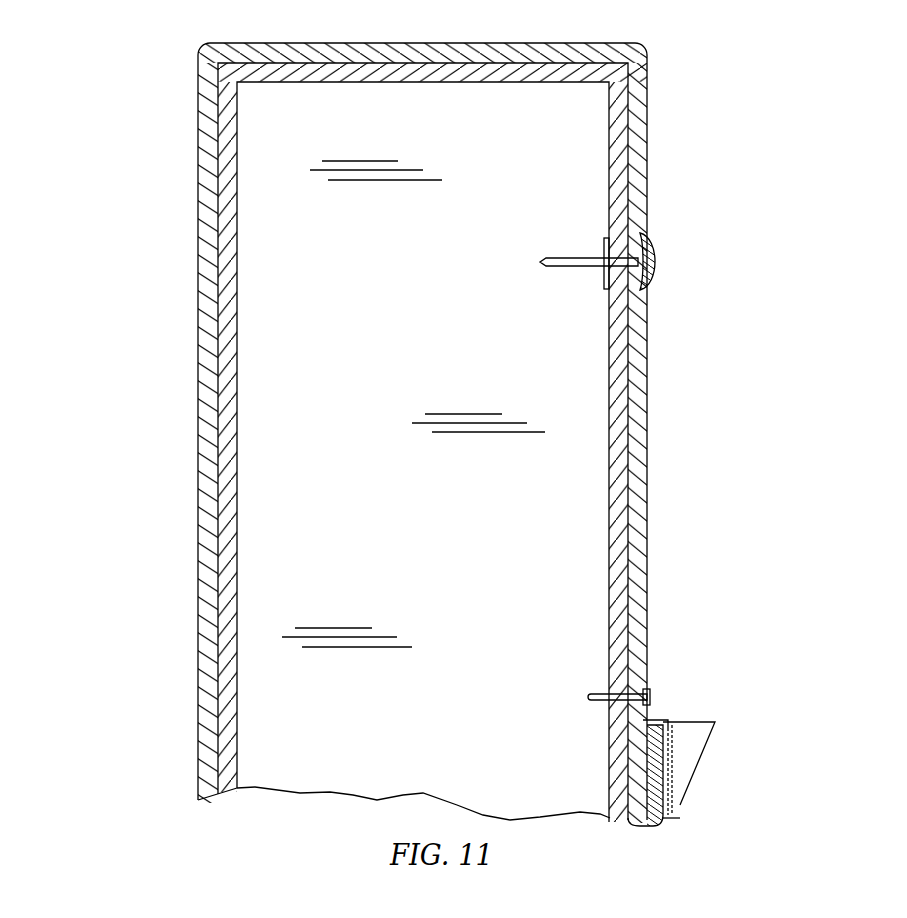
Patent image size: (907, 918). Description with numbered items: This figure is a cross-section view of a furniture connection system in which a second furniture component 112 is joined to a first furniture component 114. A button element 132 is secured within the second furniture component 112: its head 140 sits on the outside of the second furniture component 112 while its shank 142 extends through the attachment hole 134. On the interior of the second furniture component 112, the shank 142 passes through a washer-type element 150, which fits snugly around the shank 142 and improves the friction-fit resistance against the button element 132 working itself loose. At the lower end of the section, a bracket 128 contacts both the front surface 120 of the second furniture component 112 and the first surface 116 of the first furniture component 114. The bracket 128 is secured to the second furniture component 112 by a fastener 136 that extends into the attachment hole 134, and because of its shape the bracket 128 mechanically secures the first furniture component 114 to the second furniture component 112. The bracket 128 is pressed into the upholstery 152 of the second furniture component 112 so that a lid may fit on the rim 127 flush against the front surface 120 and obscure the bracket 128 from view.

The second furniture component 112 is at (630, 101).
The first furniture component 114 is at (667, 807).
The first surface 116 is at (667, 818).
The front surface 120 is at (647, 460).
The rim 127 is at (668, 723).
The bracket 128 is at (645, 713).
The button element 132 is at (652, 242).
The attachment hole 134 is at (617, 247).
The fastener 136 is at (596, 702).
The head 140 is at (655, 267).
The shank 142 is at (568, 258).
The washer-type element 150 is at (600, 278).
The upholstery 152 is at (647, 390).